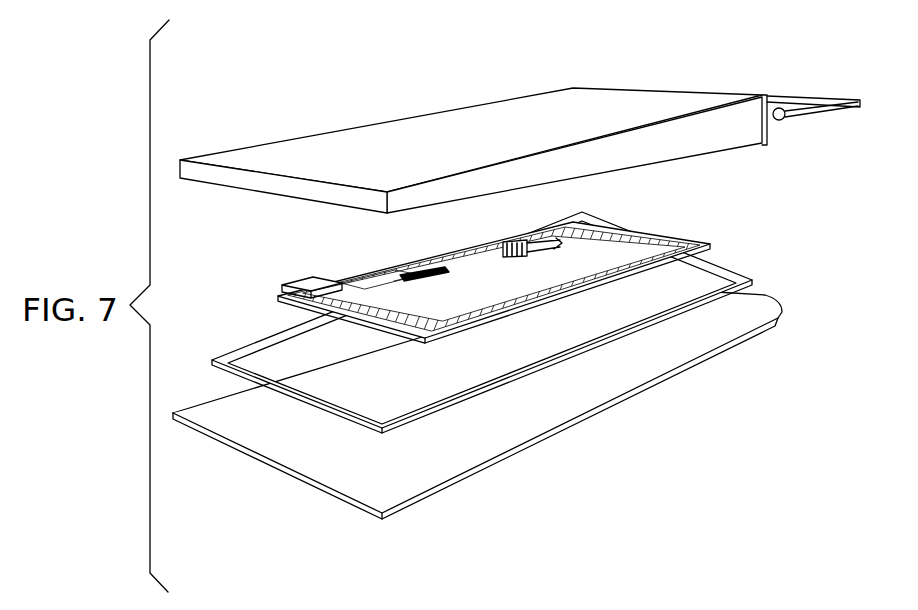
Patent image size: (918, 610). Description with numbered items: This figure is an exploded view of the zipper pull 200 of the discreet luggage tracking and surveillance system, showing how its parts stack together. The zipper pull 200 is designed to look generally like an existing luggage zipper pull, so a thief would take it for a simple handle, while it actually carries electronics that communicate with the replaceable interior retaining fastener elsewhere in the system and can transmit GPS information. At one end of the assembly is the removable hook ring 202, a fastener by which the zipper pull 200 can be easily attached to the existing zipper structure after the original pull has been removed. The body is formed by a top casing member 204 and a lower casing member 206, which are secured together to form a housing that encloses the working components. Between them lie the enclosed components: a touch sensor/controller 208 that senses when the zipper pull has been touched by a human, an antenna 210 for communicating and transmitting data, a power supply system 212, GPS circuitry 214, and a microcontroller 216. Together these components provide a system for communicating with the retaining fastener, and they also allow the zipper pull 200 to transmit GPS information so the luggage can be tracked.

The zipper pull 200 is at (807, 338).
The removable hook ring 202 is at (817, 107).
The top casing member 204 is at (461, 118).
The lower casing member 206 is at (607, 386).
The touch sensor/controller 208 is at (600, 232).
The antenna 210 is at (248, 352).
The power supply system 212 is at (303, 277).
The GPS circuitry 214 is at (414, 274).
The microcontroller 216 is at (524, 240).